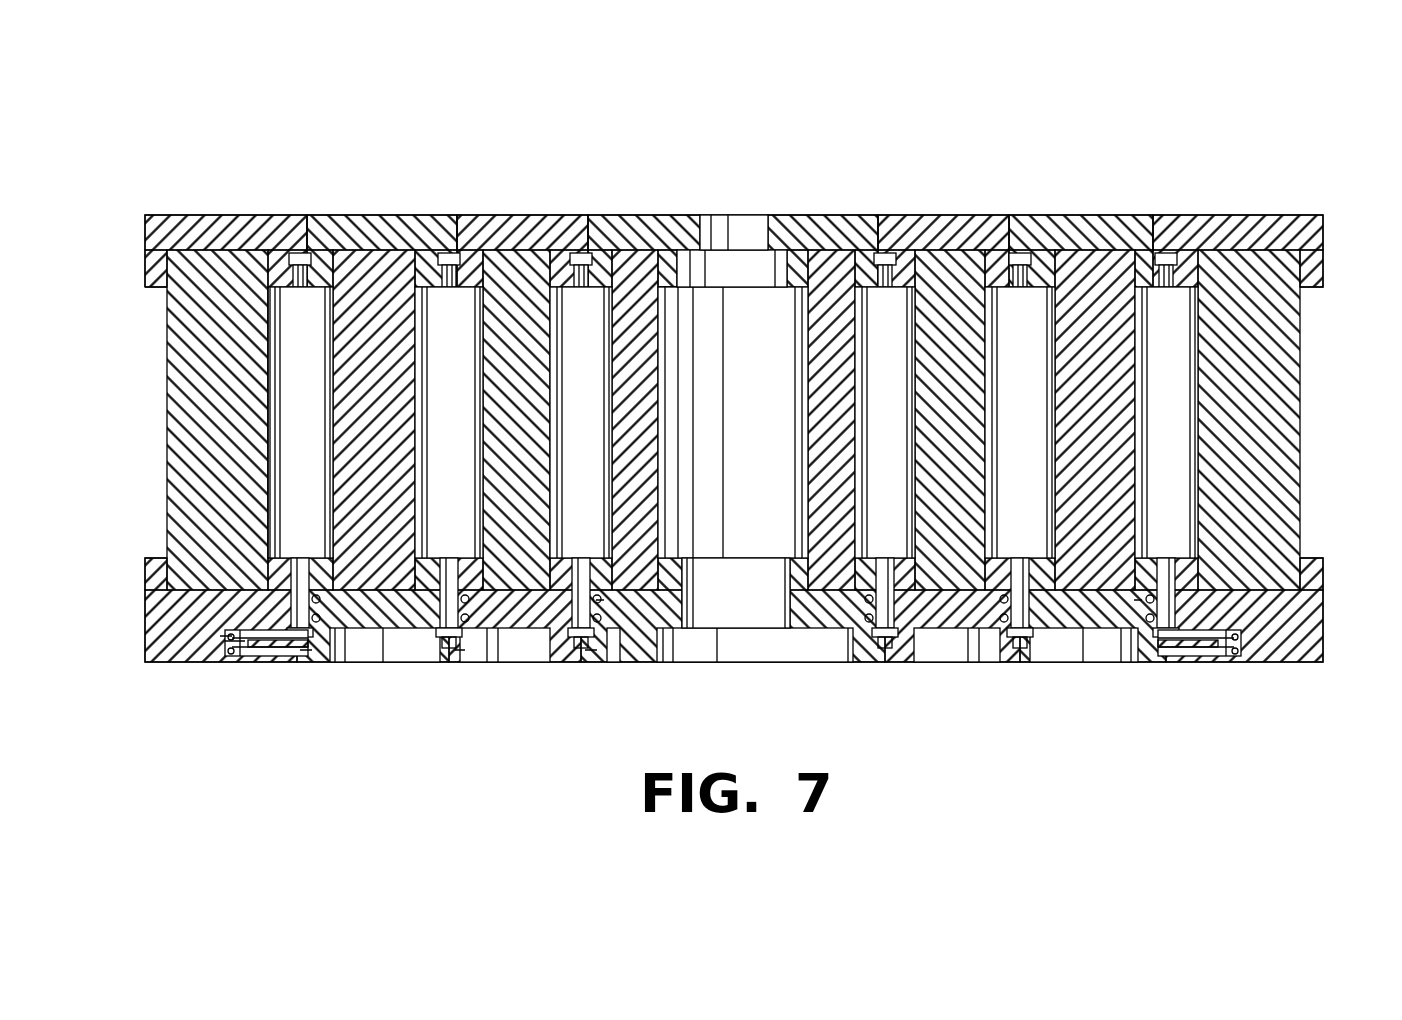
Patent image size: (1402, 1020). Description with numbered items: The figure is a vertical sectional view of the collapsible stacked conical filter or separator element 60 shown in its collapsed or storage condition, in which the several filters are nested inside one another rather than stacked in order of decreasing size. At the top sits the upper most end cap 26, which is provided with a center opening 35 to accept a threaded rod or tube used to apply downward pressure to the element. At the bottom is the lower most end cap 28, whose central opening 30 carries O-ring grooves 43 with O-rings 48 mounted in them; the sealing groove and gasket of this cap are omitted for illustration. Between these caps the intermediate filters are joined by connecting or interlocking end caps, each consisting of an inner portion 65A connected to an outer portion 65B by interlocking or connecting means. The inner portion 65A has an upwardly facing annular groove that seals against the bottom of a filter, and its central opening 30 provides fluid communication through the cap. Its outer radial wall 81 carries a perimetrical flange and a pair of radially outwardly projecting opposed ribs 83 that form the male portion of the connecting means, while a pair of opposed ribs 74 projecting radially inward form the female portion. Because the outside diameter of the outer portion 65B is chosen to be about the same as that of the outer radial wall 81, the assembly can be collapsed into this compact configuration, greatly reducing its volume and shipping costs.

The collapsible stacked conical filter or separator element 60 is at (1282, 150).
The upper most end cap 26 is at (752, 349).
The center opening 35 is at (707, 233).
The outer portion 65B is at (912, 222).
The inner portion 65A is at (303, 665).
The opposed ribs 74 is at (300, 290).
The outer radial wall 81 is at (290, 590).
The central opening 30 is at (780, 577).
The lower most end cap 28 is at (142, 615).
The O-ring grooves 43 is at (217, 653).
The O-rings 48 is at (263, 657).
The radially outwardly projecting opposed ribs 83 is at (293, 663).